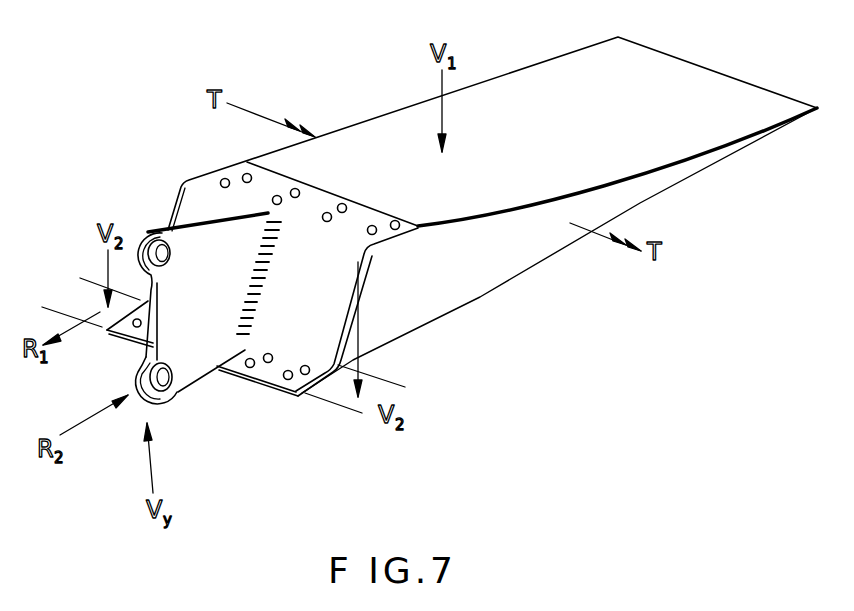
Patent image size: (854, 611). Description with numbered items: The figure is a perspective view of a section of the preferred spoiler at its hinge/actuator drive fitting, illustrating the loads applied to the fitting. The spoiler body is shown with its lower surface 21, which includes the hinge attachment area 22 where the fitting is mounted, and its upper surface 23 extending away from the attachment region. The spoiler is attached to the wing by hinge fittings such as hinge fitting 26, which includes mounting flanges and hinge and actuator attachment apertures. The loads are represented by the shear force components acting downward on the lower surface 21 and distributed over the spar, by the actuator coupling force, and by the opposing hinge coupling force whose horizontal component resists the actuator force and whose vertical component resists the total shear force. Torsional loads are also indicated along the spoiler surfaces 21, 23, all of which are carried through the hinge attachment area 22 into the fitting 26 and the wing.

The lower surface 21 is at (552, 83).
The hinge attachment area 22 is at (402, 243).
The upper surface 23 is at (543, 260).
The hinge fitting 26 is at (188, 243).